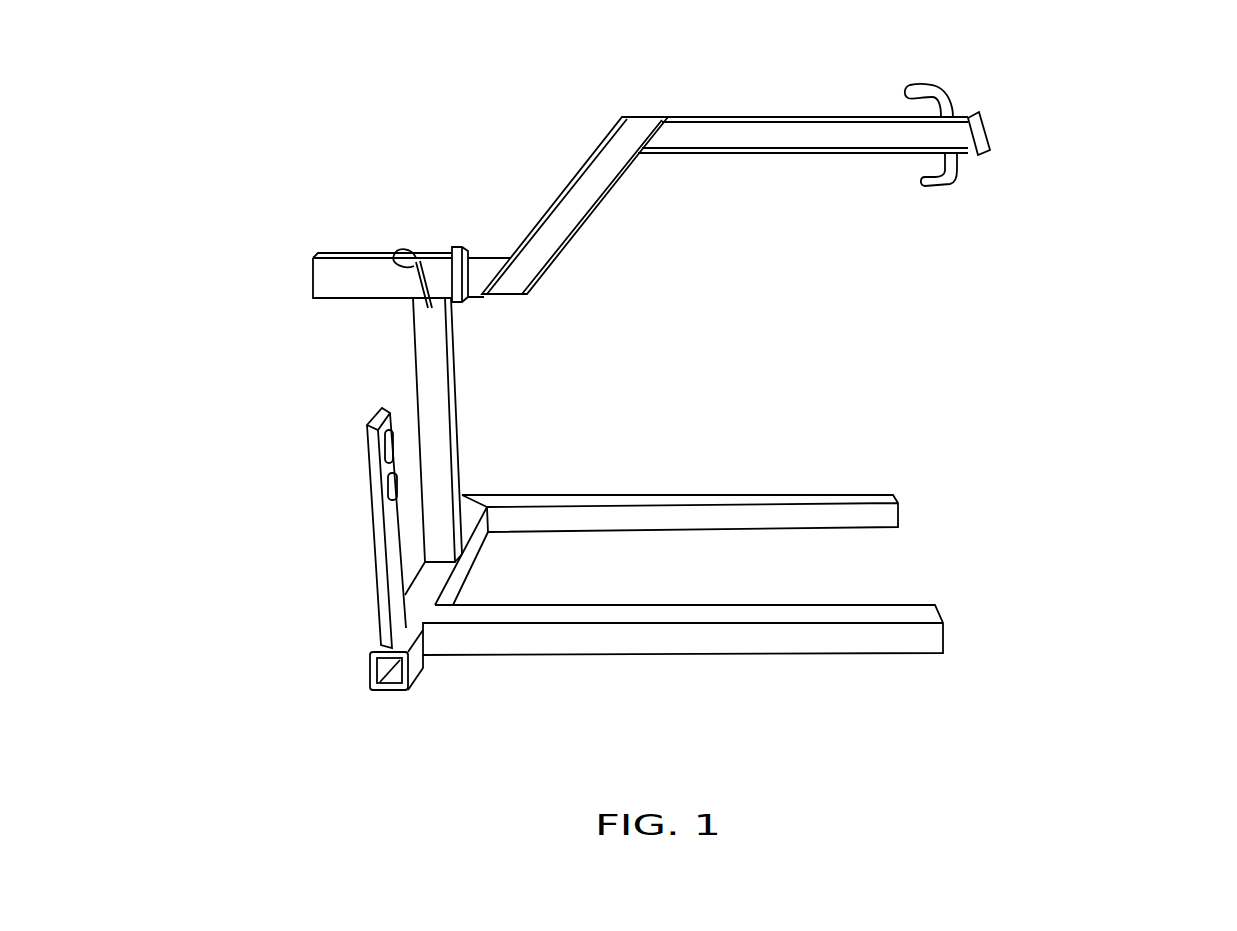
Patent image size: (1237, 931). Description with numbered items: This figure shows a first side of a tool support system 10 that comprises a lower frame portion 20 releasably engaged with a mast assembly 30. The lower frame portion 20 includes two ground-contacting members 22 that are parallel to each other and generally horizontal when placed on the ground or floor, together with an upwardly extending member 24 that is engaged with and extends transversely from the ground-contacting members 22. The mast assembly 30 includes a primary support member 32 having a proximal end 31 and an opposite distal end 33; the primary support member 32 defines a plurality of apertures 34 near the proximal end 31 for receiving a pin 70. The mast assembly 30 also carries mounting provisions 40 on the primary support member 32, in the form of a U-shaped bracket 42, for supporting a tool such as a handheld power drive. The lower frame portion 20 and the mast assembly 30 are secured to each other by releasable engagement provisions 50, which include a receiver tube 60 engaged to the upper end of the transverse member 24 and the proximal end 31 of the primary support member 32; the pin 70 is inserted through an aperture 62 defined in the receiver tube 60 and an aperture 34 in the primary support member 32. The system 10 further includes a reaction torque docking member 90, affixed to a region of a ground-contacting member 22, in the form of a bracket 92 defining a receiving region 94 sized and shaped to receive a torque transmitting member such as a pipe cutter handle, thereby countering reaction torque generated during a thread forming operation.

The tool support system 10 is at (1145, 125).
The lower frame portion 20 is at (216, 399).
The ground-contacting member 22 is at (815, 516).
The upwardly extending member 24 is at (442, 412).
The mast assembly 30 is at (521, 125).
The proximal end 31 is at (364, 163).
The primary support member 32 is at (583, 200).
The distal end 33 is at (985, 134).
The apertures 34 is at (401, 222).
The mounting provisions 40 is at (969, 111).
The U-shaped bracket 42 is at (938, 90).
The releasable engagement provisions 50 is at (255, 167).
The receiver tube 60 is at (346, 278).
The aperture 62 is at (420, 250).
The pin 70 is at (412, 290).
The reaction torque docking member 90 is at (335, 528).
The bracket 92 is at (376, 568).
The receiving region 94 is at (378, 460).